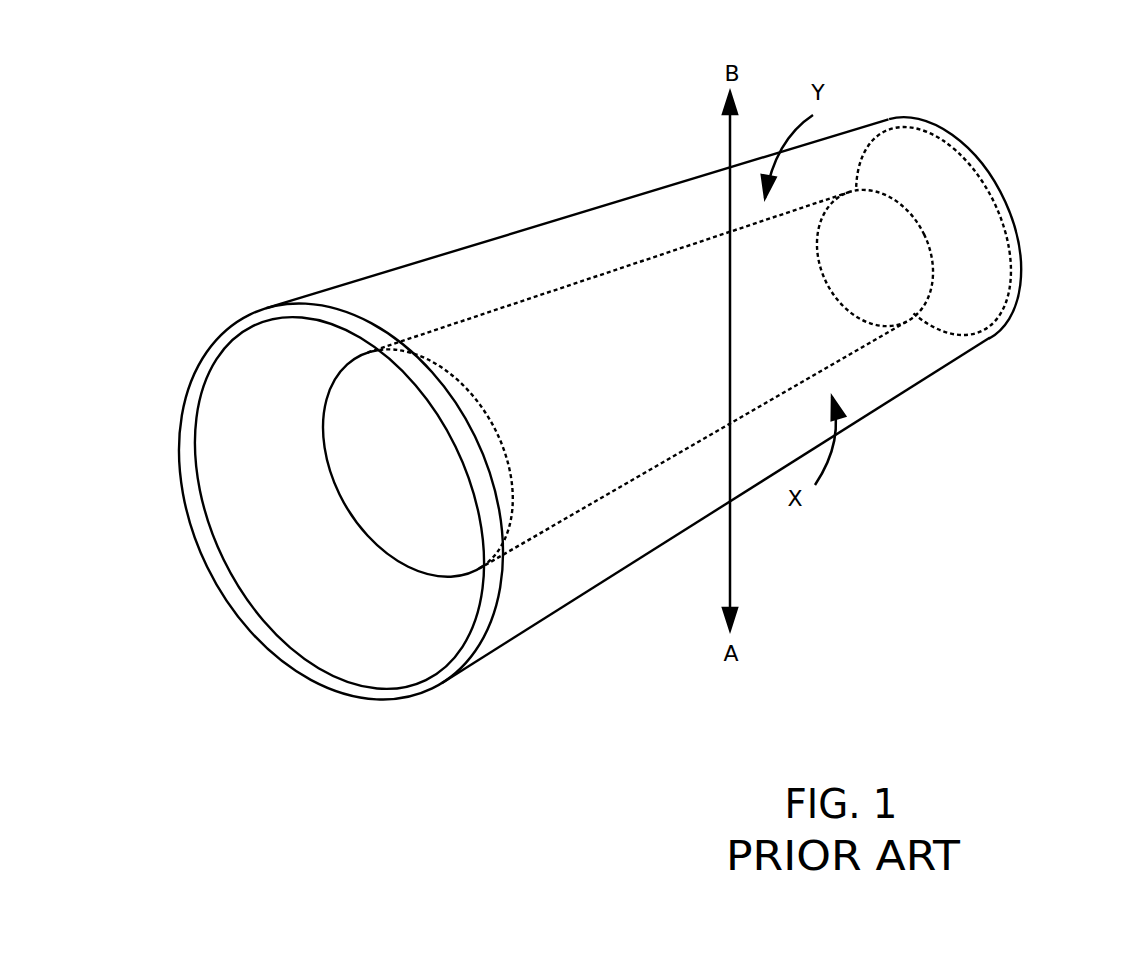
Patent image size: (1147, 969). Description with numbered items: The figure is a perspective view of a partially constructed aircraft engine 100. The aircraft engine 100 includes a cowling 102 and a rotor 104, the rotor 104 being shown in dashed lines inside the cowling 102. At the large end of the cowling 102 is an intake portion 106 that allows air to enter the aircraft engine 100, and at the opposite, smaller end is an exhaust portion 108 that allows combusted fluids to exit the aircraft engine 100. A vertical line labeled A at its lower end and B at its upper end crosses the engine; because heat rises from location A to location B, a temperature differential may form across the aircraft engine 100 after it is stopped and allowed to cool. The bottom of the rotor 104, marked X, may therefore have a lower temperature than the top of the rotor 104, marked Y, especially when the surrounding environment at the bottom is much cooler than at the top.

The aircraft engine 100 is at (595, 392).
The cowling 102 is at (365, 282).
The rotor 104 is at (523, 300).
The intake portion 106 is at (165, 552).
The exhaust portion 108 is at (1013, 168).